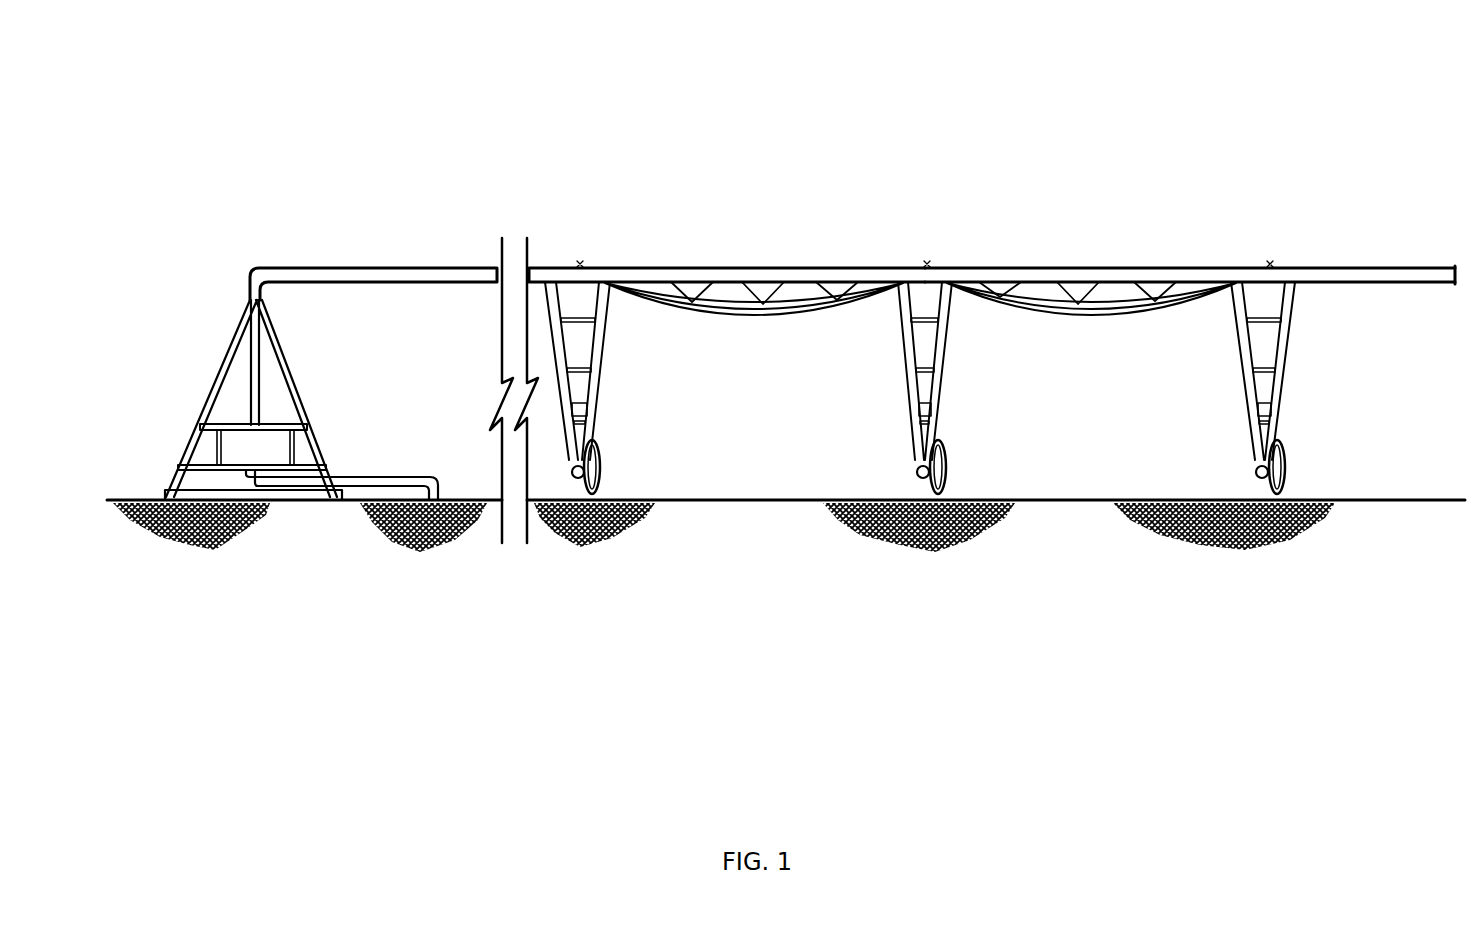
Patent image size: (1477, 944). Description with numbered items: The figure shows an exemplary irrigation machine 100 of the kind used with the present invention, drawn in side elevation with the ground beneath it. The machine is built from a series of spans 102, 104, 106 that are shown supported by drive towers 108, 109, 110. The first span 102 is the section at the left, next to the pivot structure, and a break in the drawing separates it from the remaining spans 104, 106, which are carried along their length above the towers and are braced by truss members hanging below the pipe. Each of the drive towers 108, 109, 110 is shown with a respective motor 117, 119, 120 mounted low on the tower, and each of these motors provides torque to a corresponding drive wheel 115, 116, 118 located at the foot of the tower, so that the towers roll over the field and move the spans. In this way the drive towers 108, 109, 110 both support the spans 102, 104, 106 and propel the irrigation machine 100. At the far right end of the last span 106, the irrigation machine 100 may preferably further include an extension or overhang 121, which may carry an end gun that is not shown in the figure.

The irrigation machine 100 is at (858, 96).
The span 102 is at (318, 268).
The span 104 is at (718, 268).
The span 106 is at (1073, 268).
The drive tower 108 is at (604, 356).
The drive tower 109 is at (932, 361).
The drive tower 110 is at (1289, 371).
The drive wheel 115 is at (603, 470).
The drive wheel 116 is at (947, 468).
The motor 117 is at (593, 411).
The drive wheel 118 is at (1287, 473).
The motor 119 is at (938, 411).
The motor 120 is at (1273, 415).
The extension/overhang 121 is at (1428, 268).